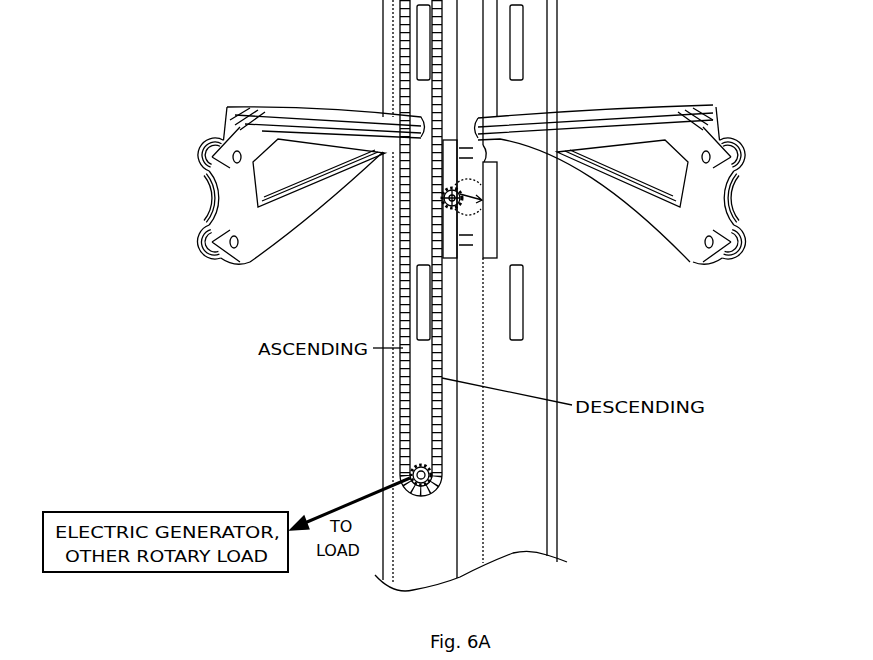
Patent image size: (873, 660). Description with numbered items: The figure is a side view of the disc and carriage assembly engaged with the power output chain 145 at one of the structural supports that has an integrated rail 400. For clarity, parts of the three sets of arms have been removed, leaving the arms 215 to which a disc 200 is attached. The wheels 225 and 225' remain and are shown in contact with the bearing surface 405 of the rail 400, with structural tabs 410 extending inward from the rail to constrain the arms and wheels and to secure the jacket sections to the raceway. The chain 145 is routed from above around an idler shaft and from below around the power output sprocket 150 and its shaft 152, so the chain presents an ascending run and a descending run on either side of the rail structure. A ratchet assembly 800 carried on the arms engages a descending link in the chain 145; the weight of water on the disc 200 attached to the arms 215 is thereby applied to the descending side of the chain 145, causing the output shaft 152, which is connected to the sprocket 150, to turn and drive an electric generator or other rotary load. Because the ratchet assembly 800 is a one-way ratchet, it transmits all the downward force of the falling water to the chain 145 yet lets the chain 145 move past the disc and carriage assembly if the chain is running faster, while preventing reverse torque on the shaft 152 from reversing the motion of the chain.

The power output chain 145 is at (402, 389).
The power output sprocket 150 is at (420, 463).
The output shaft 152 is at (413, 475).
The disc 200 is at (662, 105).
The arm 215 is at (335, 193).
The wheel 225 is at (470, 165).
The roller 225' is at (472, 240).
The rail 400 is at (558, 495).
The bearing surface 405 is at (480, 53).
The structural tab 410 is at (523, 327).
The ratchet assembly 800 is at (447, 192).